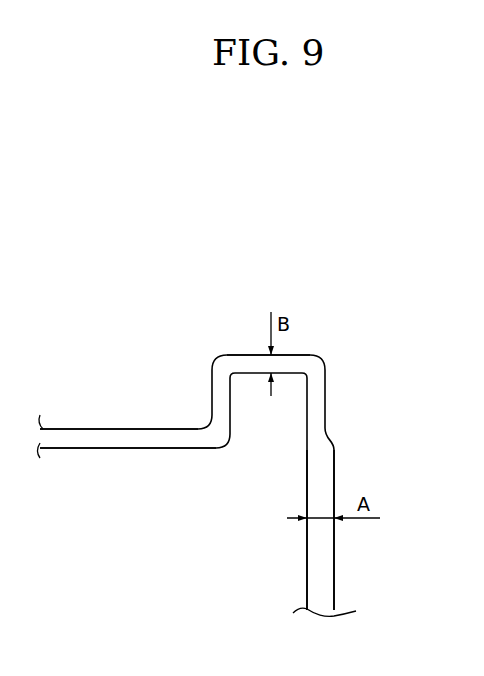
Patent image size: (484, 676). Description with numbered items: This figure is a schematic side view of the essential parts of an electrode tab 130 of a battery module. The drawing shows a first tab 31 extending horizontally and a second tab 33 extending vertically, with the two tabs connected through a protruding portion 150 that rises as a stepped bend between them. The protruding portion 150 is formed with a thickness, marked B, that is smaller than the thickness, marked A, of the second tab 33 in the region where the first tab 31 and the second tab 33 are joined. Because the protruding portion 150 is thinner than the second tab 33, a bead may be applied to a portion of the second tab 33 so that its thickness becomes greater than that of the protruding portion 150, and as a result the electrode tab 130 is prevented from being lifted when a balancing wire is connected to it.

The electrode tab 130 is at (345, 300).
The protruding portion 150 is at (245, 357).
The first tab 31 is at (92, 438).
The second tab 33 is at (325, 566).